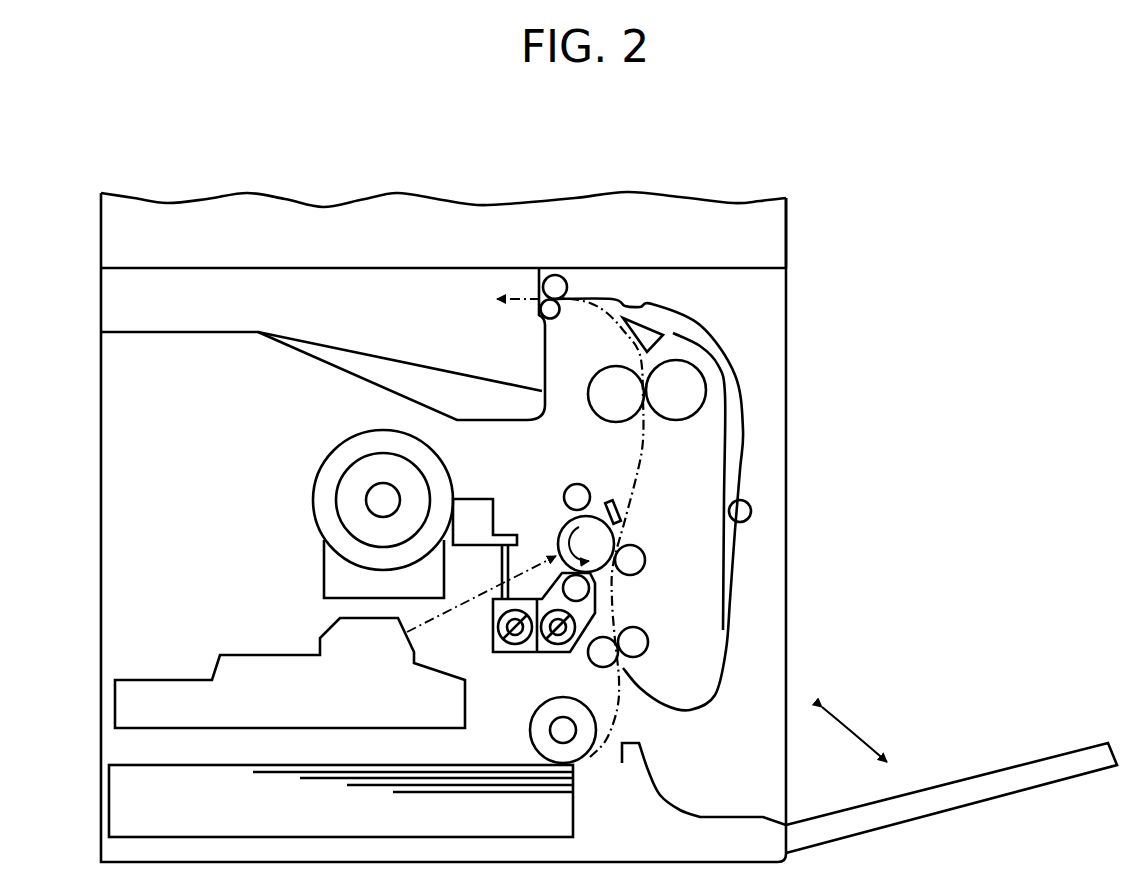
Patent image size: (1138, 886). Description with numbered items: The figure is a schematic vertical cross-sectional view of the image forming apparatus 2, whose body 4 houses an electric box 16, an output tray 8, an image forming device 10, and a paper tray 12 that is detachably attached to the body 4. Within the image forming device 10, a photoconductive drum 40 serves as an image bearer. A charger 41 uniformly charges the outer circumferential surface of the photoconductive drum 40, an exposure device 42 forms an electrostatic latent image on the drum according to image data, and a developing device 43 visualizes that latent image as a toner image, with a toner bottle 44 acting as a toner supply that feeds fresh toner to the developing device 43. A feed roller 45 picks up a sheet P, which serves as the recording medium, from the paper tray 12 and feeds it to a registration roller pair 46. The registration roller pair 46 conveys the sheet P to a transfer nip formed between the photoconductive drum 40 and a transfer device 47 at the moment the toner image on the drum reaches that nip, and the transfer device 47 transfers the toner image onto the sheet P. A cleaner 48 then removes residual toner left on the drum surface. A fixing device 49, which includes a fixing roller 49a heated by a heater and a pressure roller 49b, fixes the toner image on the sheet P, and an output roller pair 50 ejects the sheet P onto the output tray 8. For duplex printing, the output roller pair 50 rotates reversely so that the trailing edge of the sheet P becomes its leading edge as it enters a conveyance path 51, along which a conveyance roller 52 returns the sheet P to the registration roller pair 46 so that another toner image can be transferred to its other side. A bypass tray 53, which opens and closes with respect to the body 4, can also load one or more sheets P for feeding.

The image forming apparatus 2 is at (650, 153).
The body 4 is at (100, 557).
The output tray 8 is at (411, 372).
The image forming device 10 is at (255, 527).
The paper tray 12 is at (573, 808).
The electric box 16 is at (786, 237).
The photoconductive drum 40 is at (560, 530).
The charger 41 is at (577, 484).
The exposure device 42 is at (270, 655).
The developing device 43 is at (493, 632).
The toner bottle 44 is at (330, 462).
The feed roller 45 is at (545, 704).
The registration roller pair 46 is at (604, 632).
The transfer device 47 is at (646, 555).
The cleaner 48 is at (612, 500).
The fixing device 49 is at (694, 394).
The fixing roller 49a is at (606, 378).
The pressure roller 49b is at (676, 420).
The output roller pair 50 is at (562, 308).
The conveyance path 51 is at (735, 426).
The conveyance roller 52 is at (752, 509).
The bypass tray 53 is at (990, 768).
The sheet P is at (483, 765).